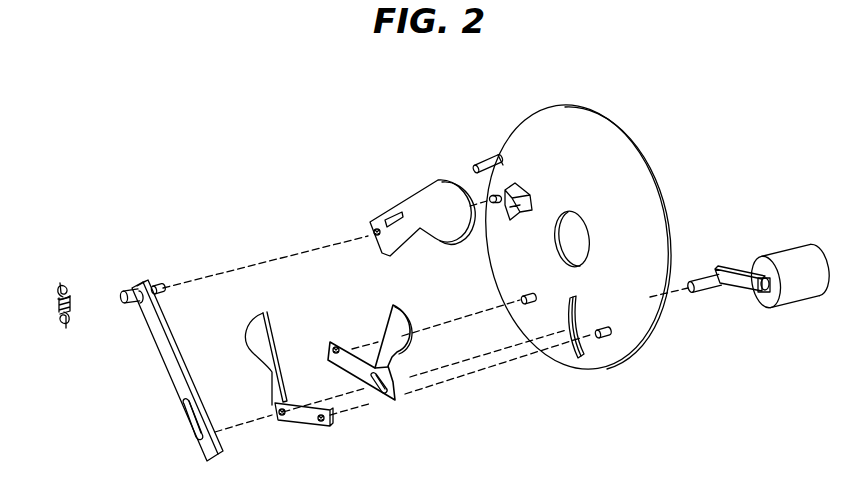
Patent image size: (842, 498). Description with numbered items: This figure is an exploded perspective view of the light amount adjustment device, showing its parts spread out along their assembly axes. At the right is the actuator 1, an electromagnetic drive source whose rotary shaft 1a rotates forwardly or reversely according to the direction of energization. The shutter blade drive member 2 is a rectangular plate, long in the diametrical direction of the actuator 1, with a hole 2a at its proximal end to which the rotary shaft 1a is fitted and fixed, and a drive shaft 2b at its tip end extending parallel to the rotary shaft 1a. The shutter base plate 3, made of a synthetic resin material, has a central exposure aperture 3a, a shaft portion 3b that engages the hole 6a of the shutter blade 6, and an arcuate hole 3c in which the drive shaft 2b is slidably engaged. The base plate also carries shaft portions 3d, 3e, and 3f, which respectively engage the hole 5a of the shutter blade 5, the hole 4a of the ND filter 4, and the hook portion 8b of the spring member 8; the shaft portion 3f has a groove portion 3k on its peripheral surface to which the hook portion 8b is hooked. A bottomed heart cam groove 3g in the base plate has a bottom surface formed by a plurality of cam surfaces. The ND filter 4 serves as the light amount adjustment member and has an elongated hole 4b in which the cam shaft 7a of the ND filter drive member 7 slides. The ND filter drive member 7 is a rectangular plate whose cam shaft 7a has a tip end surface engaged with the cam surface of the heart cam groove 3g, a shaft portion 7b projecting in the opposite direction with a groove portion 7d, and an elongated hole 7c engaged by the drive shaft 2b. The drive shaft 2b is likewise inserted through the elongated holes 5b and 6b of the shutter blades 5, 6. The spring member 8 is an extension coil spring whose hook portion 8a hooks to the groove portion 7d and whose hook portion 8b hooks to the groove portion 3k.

The actuator 1 is at (798, 296).
The rotary shaft 1a is at (769, 266).
The shutter blade drive member 2 is at (737, 270).
The hole 2a is at (759, 294).
The drive shaft 2b is at (706, 292).
The shutter base plate 3 is at (528, 108).
The exposure aperture 3a is at (593, 240).
The shaft portion 3b is at (611, 337).
The arcuate hole 3c is at (572, 358).
The shaft portion 3d is at (521, 302).
The shaft portion 3e is at (491, 204).
The shaft portion 3f is at (491, 158).
The heart cam groove 3g is at (522, 187).
The groove portion 3k is at (480, 162).
The ND filter 4 is at (427, 196).
The hole 4a is at (374, 240).
The elongated hole 4b is at (390, 215).
The shutter blade 5 is at (408, 323).
The hole 5a is at (332, 346).
The elongated hole 5b is at (382, 404).
The shutter blade 6 is at (259, 325).
The hole 6a is at (323, 422).
The elongated hole 6b is at (276, 416).
The ND filter drive member 7 is at (166, 341).
The cam shaft 7a is at (158, 286).
The shaft portion 7b is at (137, 292).
The elongated hole 7c is at (184, 417).
The groove portion 7d is at (136, 310).
The spring member 8 is at (67, 290).
The hook portion 8a is at (65, 324).
The hook portion 8b is at (60, 286).